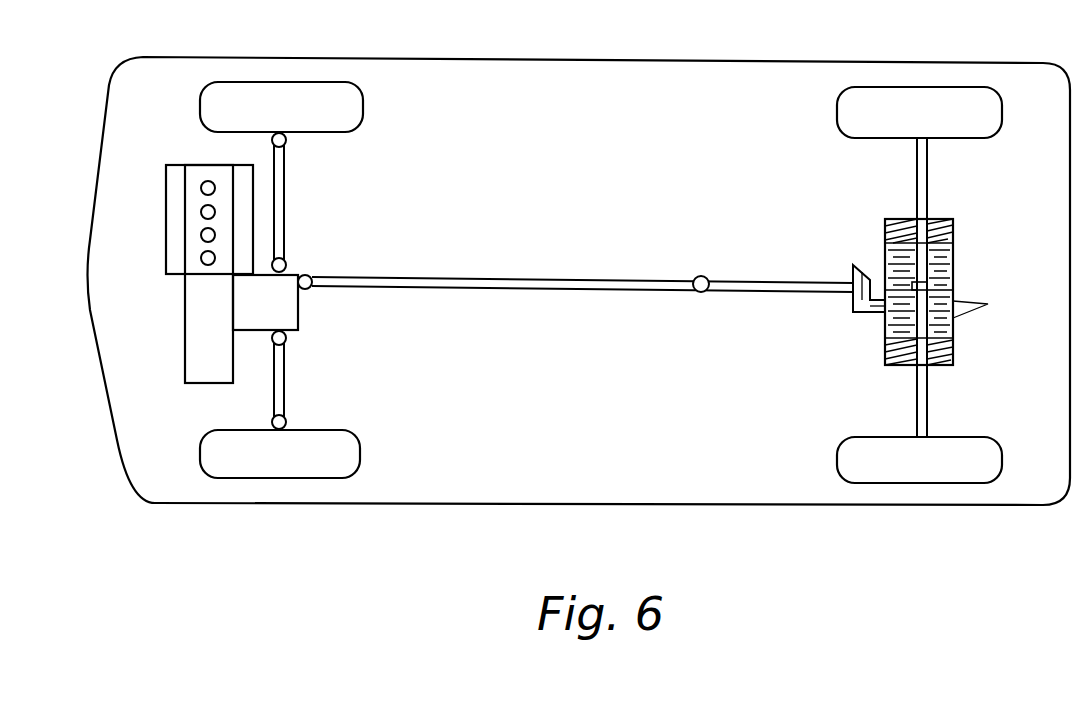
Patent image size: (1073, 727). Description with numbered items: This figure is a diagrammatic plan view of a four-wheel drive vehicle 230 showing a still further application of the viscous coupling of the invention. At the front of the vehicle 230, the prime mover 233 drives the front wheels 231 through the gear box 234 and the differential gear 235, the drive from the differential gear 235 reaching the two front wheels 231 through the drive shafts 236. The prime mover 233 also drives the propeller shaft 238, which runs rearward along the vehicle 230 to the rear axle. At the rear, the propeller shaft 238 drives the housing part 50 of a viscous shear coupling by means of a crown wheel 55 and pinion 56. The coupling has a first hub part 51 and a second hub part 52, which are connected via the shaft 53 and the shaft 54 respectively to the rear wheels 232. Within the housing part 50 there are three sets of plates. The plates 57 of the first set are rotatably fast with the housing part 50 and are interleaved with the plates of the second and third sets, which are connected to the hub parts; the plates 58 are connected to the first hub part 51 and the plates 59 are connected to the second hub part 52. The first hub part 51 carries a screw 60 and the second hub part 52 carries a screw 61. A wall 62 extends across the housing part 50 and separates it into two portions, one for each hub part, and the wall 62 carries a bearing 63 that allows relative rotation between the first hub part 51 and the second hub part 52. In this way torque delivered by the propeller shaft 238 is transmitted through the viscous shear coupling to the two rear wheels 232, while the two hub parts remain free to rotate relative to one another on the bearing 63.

The vehicle 230 is at (572, 80).
The front wheels 231 is at (343, 92).
The rear wheels 232 is at (937, 102).
The prime mover 233 is at (203, 173).
The gear box 234 is at (202, 353).
The differential gear 235 is at (275, 307).
The drive shafts 236 is at (283, 187).
The propeller shaft 238 is at (572, 283).
The housing part 50 is at (885, 225).
The first hub part 51 is at (888, 352).
The second hub part 52 is at (953, 246).
The shaft 53 is at (917, 400).
The shaft 54 is at (917, 162).
The crown wheel 55 is at (865, 305).
The pinion 56 is at (853, 270).
The plates of the first set 57 is at (950, 258).
The plates of the second set 58 is at (893, 316).
The plates of the third set 59 is at (893, 258).
The screw 60 is at (950, 355).
The screw 61 is at (937, 219).
The wall 62 is at (955, 293).
The bearing 63 is at (930, 287).